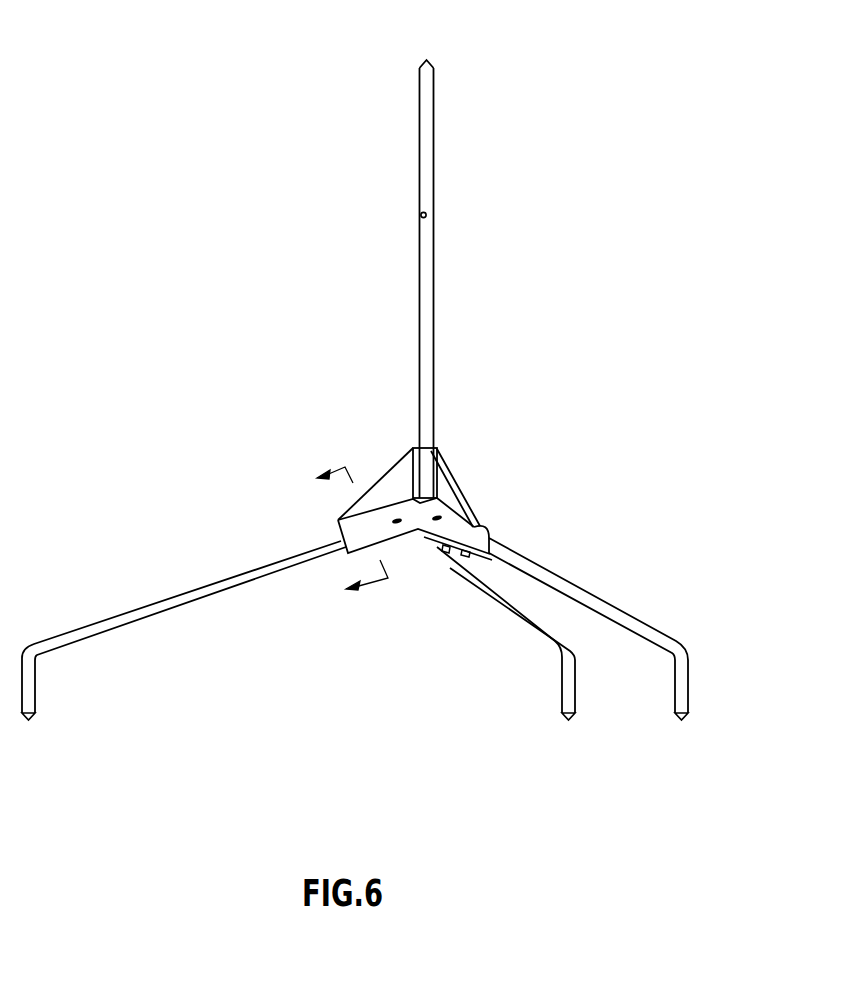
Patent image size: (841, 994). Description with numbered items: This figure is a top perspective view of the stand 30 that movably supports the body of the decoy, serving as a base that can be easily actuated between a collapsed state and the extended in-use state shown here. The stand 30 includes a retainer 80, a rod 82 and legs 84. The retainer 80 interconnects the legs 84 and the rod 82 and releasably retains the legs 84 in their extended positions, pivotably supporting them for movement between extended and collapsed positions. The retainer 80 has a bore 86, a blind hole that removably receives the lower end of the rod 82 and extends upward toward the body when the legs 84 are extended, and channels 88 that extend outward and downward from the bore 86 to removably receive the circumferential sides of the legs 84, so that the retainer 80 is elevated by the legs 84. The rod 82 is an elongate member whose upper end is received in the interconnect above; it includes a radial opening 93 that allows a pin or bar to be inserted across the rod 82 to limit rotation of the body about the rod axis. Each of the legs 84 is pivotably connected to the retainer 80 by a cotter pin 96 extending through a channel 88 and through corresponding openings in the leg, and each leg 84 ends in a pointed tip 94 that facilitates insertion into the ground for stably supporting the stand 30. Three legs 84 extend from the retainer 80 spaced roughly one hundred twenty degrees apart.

The stand 30 is at (531, 115).
The rod 82 is at (436, 322).
The radial opening 93 is at (430, 213).
The bore 86 is at (437, 450).
The retainer 80 is at (463, 488).
The channels 88 is at (433, 536).
The cotter pin 96 is at (398, 526).
The legs 84 is at (170, 596).
The pointed tip 94 is at (29, 722).